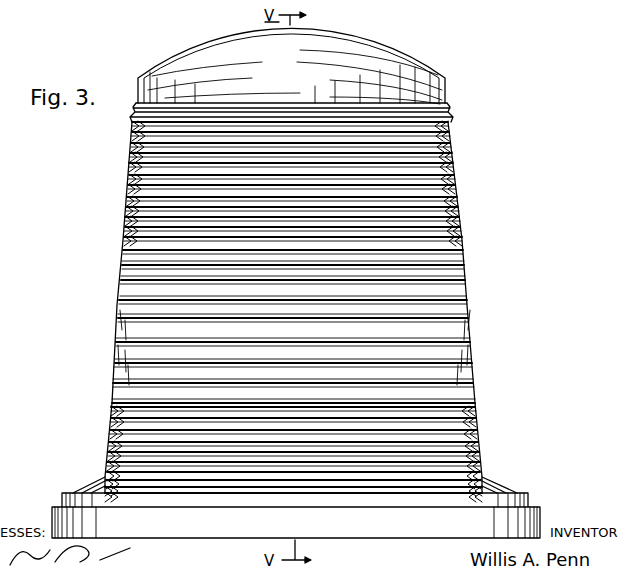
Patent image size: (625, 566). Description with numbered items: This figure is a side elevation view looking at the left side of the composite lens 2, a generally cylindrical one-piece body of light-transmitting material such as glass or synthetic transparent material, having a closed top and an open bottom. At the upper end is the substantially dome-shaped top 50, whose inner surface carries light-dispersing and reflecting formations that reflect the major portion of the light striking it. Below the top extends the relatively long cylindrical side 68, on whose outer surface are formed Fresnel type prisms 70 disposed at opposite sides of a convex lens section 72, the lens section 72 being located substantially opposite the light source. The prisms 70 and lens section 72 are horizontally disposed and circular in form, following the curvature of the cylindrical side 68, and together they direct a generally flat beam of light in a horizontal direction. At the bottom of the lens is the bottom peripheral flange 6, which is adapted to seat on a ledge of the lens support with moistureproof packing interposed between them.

The composite lens 2 is at (505, 212).
The dome-shaped top 50 is at (377, 42).
The cylindrical side 68 is at (460, 248).
The Fresnel type prisms 70 is at (455, 153).
The convex lens section 72 is at (465, 350).
The bottom peripheral flange 6 is at (538, 515).